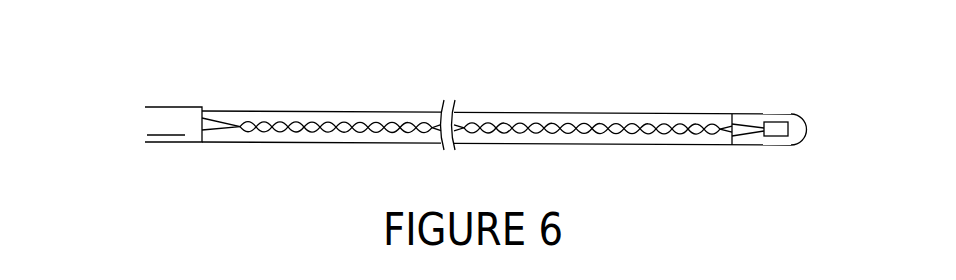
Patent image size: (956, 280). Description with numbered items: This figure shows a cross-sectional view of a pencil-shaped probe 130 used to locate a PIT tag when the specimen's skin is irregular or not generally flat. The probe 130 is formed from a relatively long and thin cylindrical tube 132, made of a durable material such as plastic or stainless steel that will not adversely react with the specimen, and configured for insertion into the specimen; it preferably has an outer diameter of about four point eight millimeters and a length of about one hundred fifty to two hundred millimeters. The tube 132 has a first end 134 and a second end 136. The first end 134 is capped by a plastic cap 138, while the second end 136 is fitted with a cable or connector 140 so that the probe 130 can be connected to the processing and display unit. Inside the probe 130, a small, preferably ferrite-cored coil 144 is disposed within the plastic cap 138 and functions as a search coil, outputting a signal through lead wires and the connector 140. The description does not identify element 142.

The probe 130 is at (258, 51).
The cylindrical tube 132 is at (500, 112).
The first end 134 is at (801, 125).
The second end 136 is at (145, 107).
The plastic cap 138 is at (787, 114).
The connector 140 is at (166, 122).
The twisted wire pair 142 is at (357, 123).
The coil 144 is at (792, 137).